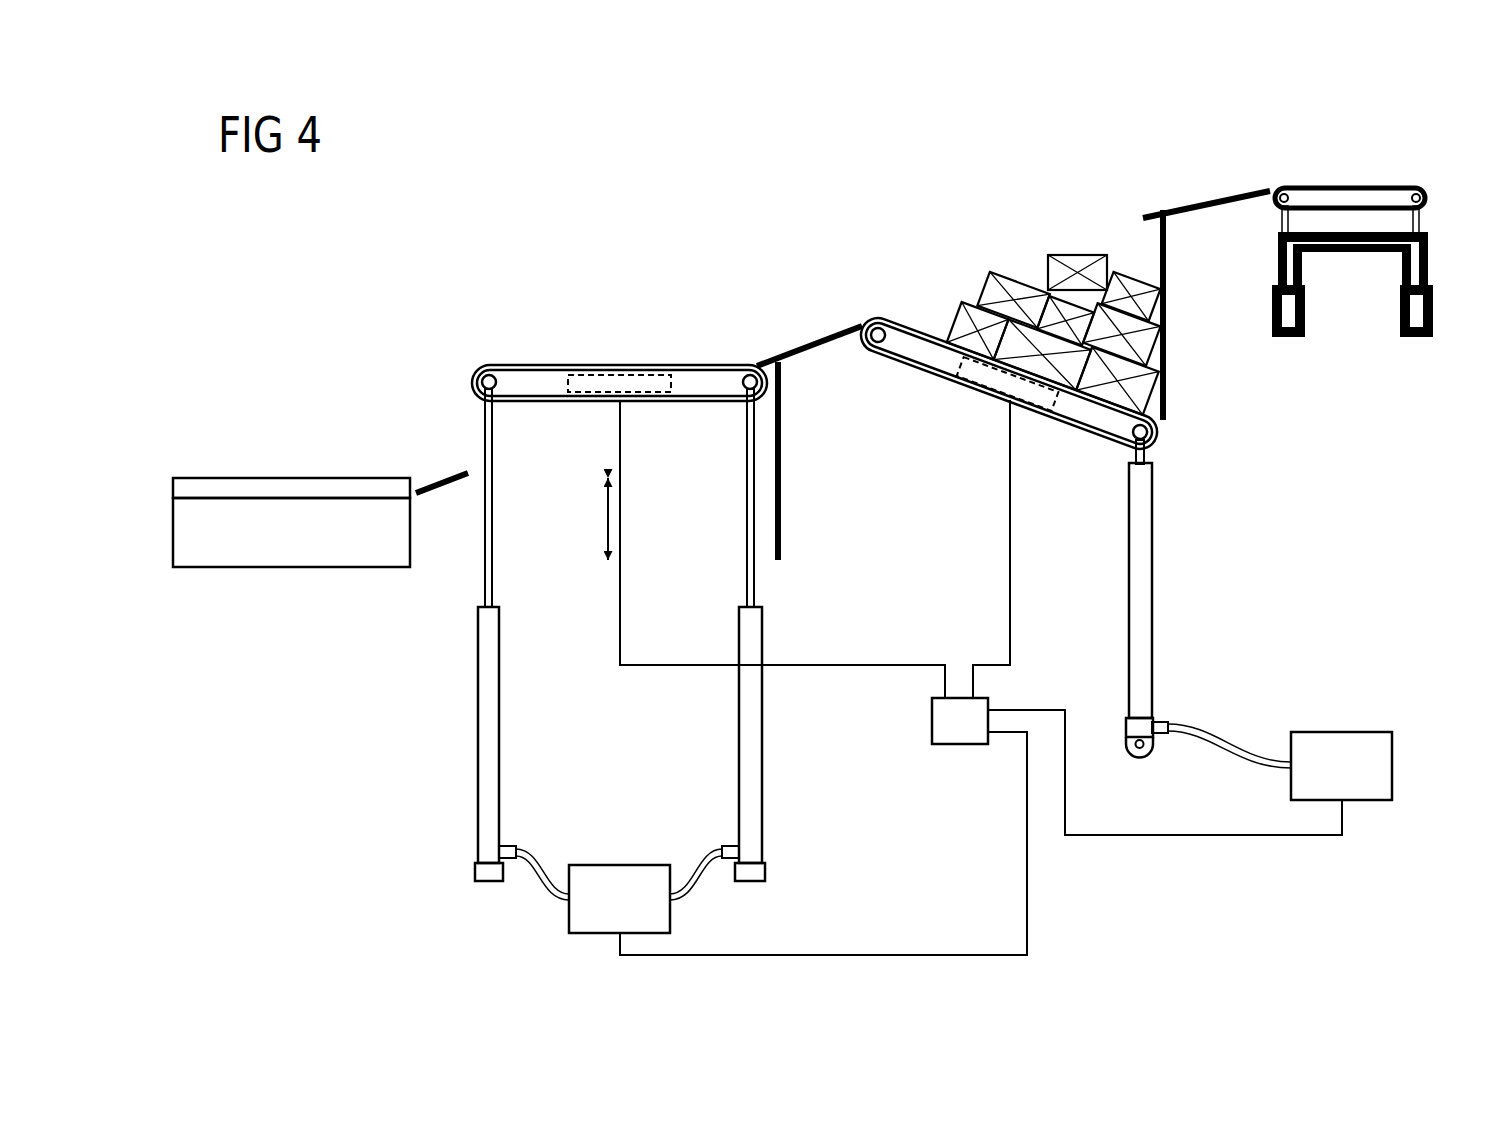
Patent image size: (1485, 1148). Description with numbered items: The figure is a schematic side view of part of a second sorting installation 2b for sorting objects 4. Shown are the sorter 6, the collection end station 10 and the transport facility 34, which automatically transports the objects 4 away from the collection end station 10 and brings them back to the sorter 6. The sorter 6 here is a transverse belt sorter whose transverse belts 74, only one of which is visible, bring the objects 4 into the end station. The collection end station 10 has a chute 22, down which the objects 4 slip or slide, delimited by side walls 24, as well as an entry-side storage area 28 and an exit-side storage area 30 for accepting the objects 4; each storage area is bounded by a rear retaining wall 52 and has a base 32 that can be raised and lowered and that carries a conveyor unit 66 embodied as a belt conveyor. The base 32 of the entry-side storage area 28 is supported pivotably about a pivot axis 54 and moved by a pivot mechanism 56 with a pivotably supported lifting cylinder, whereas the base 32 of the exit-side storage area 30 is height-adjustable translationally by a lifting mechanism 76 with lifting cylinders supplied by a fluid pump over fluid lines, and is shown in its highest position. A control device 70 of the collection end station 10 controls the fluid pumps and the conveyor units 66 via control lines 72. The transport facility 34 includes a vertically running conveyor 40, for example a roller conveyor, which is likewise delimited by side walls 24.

The second sorting installation 2b is at (858, 205).
The object 4 is at (1079, 255).
The sorter 6 is at (1356, 186).
The collection end station 10 is at (583, 257).
The chute 22 is at (991, 337).
The side wall 24 is at (173, 487).
The entry-side storage area 28 is at (1066, 320).
The exit-side storage area 30 is at (619, 367).
The base 32 is at (535, 365).
The transport facility 34 is at (255, 570).
The conveyor 40 is at (173, 548).
The rear retaining wall 52 is at (1166, 262).
The pivot axis 54 is at (878, 335).
The pivot mechanism 56 is at (597, 663).
The conveyor unit 66 is at (1009, 383).
The control device 70 is at (958, 745).
The control line 72 is at (650, 668).
The transverse belt 74 is at (1340, 188).
The lifting mechanism 76 is at (620, 635).